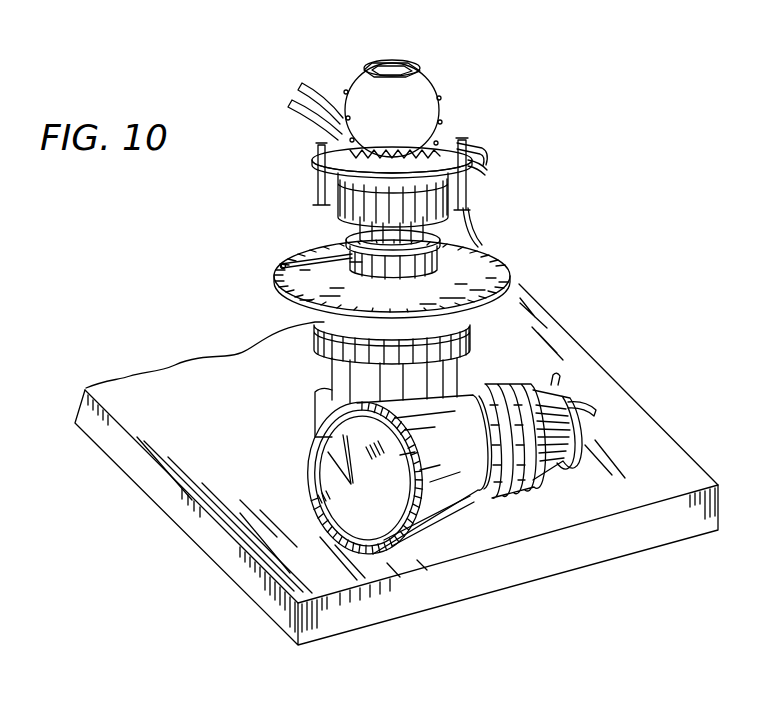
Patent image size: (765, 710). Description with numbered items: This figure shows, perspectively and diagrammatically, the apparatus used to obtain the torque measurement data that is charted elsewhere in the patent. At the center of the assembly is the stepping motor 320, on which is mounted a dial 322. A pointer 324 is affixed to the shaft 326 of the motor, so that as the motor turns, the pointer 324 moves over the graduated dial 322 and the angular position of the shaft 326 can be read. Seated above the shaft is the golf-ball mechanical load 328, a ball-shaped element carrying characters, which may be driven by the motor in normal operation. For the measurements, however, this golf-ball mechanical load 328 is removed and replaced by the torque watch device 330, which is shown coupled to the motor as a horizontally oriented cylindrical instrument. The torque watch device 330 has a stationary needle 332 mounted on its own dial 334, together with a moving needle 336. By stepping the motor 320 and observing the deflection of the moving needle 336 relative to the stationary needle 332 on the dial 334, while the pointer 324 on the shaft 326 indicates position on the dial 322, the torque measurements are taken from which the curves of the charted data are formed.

The stepping motor 320 is at (332, 376).
The dial 322 is at (512, 274).
The pointer 324 is at (268, 280).
The shaft 326 is at (362, 227).
The golf-ball mechanical load 328 is at (382, 67).
The torque watch device 330 is at (516, 474).
The stationary needle 332 is at (400, 497).
The dial 334 is at (340, 511).
The moving needle 336 is at (420, 502).